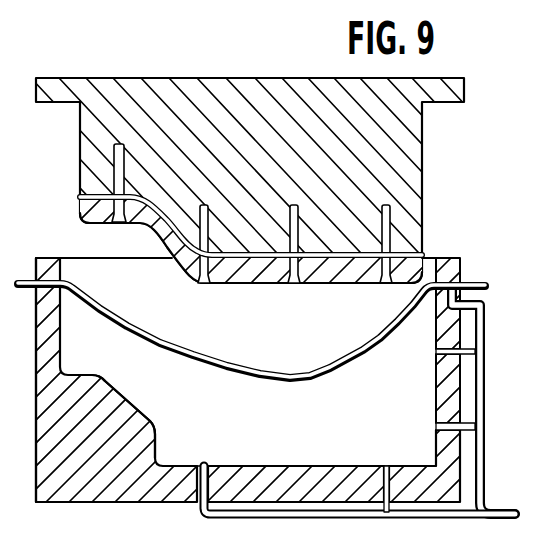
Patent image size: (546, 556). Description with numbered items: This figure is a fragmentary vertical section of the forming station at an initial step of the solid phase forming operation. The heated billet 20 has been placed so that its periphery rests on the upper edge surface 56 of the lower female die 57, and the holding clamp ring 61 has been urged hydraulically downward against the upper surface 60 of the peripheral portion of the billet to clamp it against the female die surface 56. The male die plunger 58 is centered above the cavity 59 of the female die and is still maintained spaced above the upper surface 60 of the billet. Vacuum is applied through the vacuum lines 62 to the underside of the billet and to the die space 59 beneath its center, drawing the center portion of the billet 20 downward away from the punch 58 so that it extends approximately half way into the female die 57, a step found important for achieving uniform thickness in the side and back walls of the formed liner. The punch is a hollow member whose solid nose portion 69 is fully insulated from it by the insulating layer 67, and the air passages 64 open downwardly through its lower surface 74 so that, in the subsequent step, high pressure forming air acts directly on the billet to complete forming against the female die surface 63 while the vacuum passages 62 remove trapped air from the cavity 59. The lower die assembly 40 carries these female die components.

The heated billet 20 is at (457, 240).
The lower die assembly 40 is at (18, 401).
The upper edge surface 56 is at (49, 281).
The lower female die 57 is at (97, 503).
The male die plunger 58 is at (183, 88).
The cavity 59 is at (309, 436).
The upper surface 60 is at (191, 353).
The holding clamp ring 61 is at (35, 267).
The vacuum lines 62 is at (486, 400).
The female die surface 63 is at (161, 437).
The air passages 64 is at (211, 214).
The insulating layer 67 is at (262, 252).
The nose portion 69 is at (342, 286).
The lower surface 74 is at (263, 285).